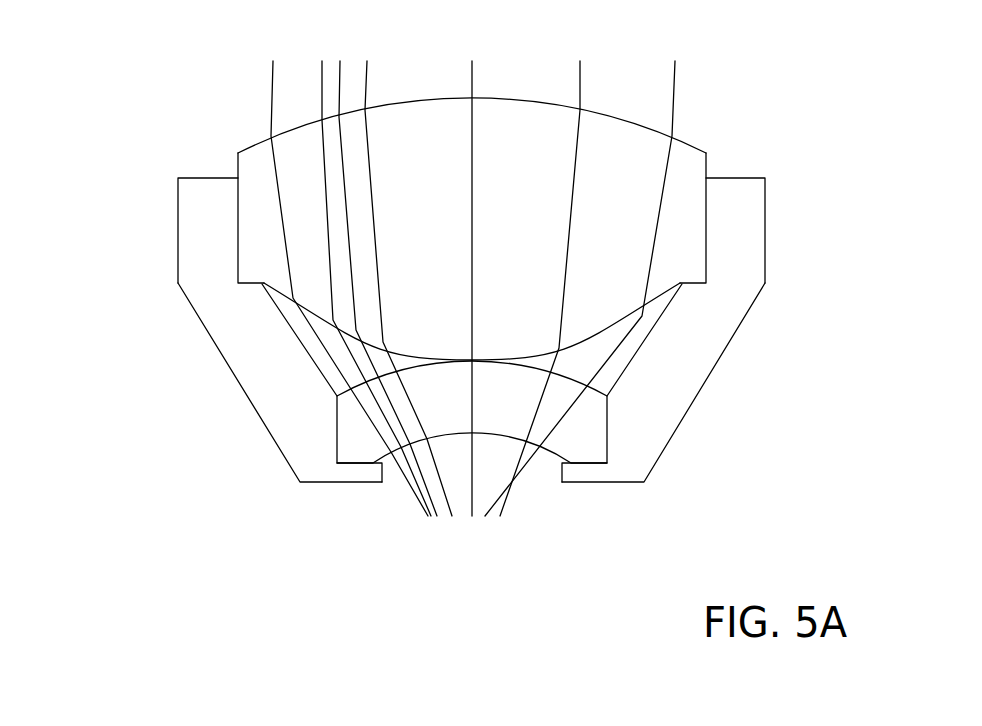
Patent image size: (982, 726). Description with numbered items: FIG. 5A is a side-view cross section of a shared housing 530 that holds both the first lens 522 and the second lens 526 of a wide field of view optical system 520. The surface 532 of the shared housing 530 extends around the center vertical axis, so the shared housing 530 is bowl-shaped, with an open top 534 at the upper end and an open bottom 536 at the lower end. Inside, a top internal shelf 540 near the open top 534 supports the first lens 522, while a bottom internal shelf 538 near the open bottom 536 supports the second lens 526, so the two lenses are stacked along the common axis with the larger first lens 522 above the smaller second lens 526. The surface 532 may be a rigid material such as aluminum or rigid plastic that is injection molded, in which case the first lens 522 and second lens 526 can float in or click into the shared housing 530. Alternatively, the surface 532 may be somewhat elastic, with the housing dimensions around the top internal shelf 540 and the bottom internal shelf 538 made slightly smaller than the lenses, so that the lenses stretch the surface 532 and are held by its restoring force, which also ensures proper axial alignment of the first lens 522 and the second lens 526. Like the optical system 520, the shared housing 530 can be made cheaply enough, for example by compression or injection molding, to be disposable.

The wide field of view optical system 520 is at (193, 88).
The first lens 522 is at (528, 98).
The second lens 526 is at (453, 437).
The shared housing 530 is at (131, 273).
The surface 532 is at (192, 177).
The open top 534 is at (717, 163).
The open bottom 536 is at (547, 473).
The bottom internal shelf 538 is at (357, 473).
The top internal shelf 540 is at (253, 288).